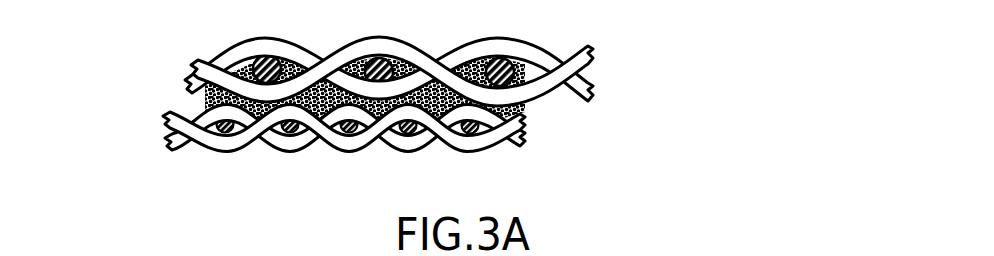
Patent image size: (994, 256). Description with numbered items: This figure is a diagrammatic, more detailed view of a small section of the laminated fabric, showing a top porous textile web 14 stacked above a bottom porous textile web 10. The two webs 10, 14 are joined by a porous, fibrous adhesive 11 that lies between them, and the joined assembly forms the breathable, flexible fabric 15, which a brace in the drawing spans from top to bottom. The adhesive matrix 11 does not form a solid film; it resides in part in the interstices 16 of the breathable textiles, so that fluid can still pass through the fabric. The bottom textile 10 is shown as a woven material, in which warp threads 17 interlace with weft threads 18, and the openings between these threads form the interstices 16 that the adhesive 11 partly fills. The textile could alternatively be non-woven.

The bottom porous textile web 10 is at (284, 162).
The porous adhesive 11 is at (428, 102).
The top porous textile web 14 is at (229, 81).
The breathable flexible fabric 15 is at (593, 158).
The interstices 16 is at (323, 107).
The warp threads 17 is at (195, 155).
The weft threads 18 is at (262, 147).